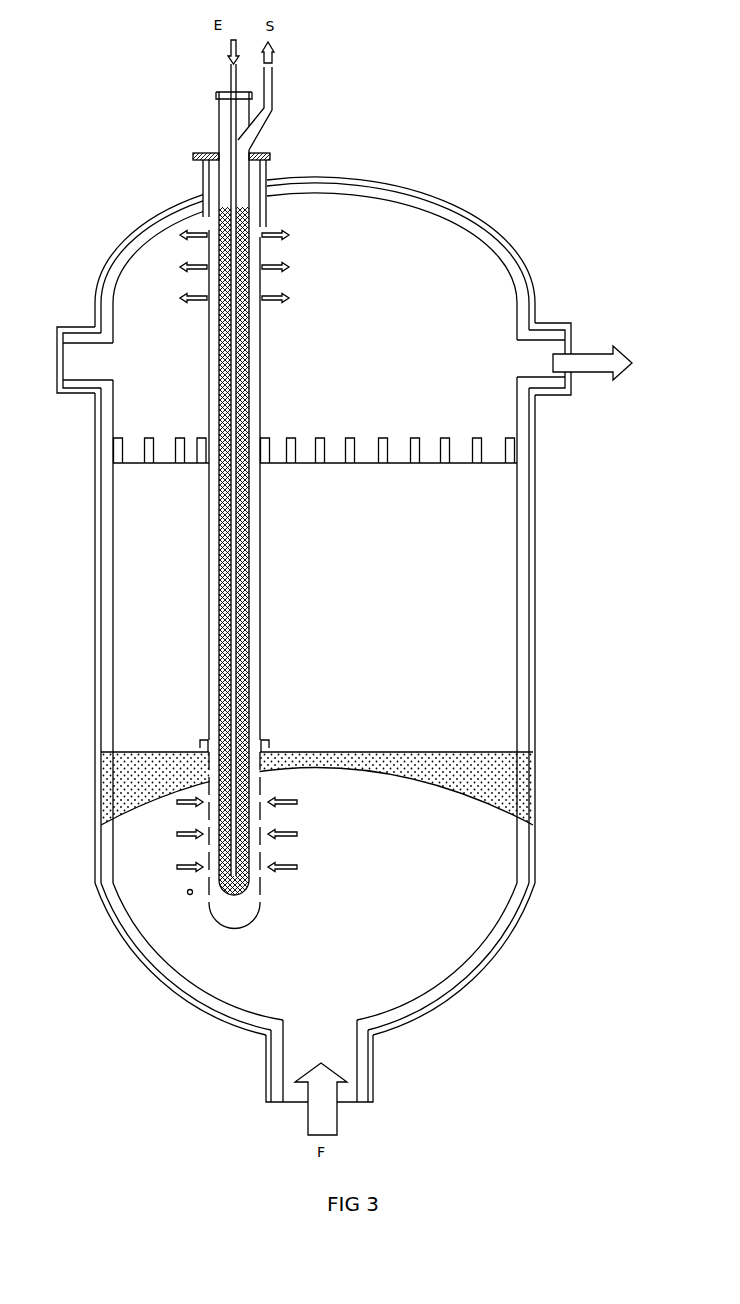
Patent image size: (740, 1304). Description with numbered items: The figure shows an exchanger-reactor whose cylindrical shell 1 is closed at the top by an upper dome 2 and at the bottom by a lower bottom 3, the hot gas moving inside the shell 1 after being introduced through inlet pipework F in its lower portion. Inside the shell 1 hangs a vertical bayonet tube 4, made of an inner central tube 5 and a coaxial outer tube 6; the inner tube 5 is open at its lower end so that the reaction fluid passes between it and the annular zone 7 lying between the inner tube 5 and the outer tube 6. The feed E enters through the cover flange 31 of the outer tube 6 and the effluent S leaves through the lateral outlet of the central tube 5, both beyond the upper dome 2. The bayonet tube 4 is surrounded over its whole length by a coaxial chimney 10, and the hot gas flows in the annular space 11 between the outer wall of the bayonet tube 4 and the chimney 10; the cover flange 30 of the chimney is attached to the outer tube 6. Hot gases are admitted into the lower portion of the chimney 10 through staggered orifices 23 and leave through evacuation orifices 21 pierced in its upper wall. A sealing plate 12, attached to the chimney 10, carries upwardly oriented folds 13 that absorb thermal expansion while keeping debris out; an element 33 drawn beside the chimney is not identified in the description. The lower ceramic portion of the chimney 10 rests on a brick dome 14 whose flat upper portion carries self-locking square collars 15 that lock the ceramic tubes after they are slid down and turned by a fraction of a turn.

The shell 1 is at (93, 578).
The upper dome 2 is at (478, 214).
The lower bottom 3 is at (162, 986).
The bayonet tube 4 is at (252, 896).
The inner central tube 5 is at (276, 100).
The outer tube 6 is at (216, 111).
The annular zone 7 is at (217, 145).
The chimney 10 is at (264, 361).
The annular space 11 is at (256, 678).
The sealing plate 12 is at (377, 472).
The folds 13 is at (388, 437).
The brick dome 14 is at (336, 750).
The square collars 15 is at (271, 746).
The evacuation orifices 21 is at (264, 272).
The orifices 23 is at (271, 835).
The cover flange of the chimney 30 is at (273, 156).
The cover flange of the outer tube 31 is at (216, 89).
The chimney adjacent to tube 33 is at (271, 438).